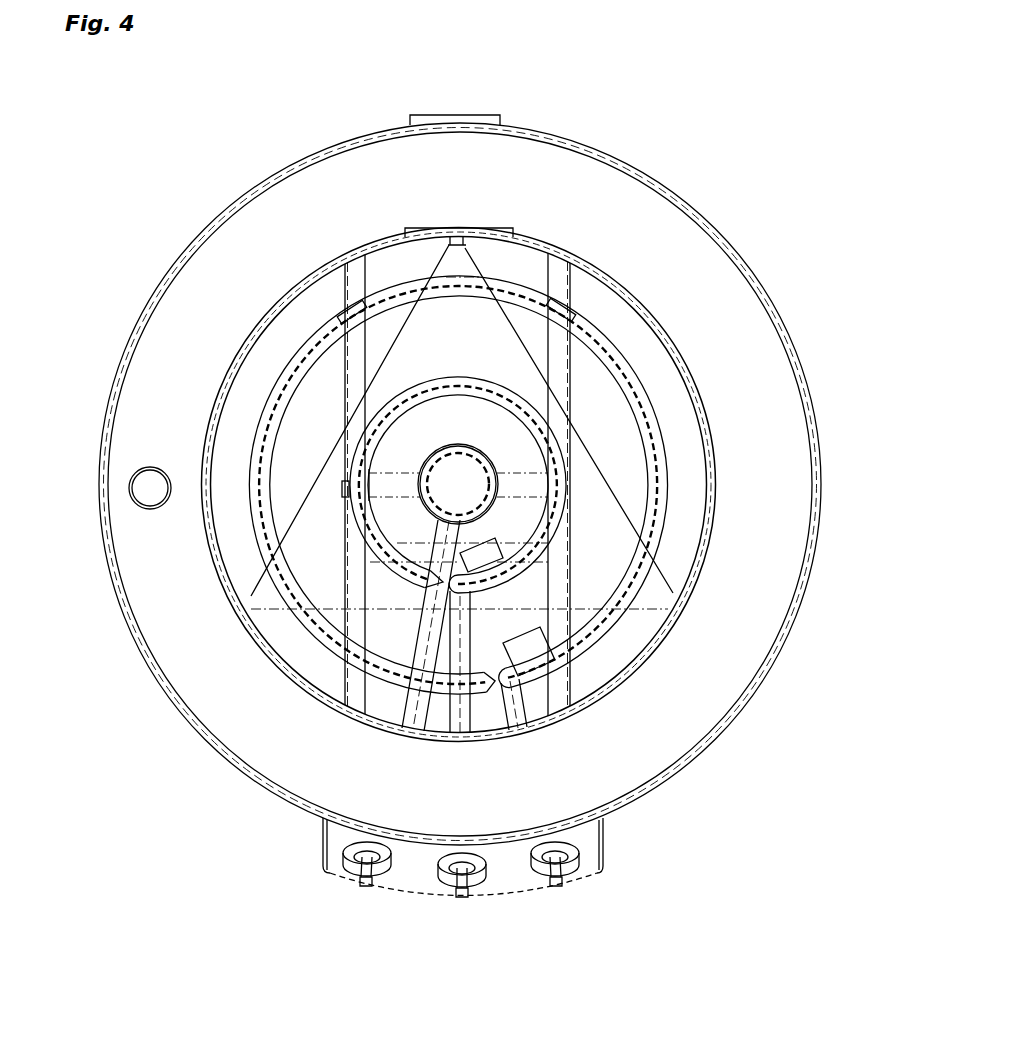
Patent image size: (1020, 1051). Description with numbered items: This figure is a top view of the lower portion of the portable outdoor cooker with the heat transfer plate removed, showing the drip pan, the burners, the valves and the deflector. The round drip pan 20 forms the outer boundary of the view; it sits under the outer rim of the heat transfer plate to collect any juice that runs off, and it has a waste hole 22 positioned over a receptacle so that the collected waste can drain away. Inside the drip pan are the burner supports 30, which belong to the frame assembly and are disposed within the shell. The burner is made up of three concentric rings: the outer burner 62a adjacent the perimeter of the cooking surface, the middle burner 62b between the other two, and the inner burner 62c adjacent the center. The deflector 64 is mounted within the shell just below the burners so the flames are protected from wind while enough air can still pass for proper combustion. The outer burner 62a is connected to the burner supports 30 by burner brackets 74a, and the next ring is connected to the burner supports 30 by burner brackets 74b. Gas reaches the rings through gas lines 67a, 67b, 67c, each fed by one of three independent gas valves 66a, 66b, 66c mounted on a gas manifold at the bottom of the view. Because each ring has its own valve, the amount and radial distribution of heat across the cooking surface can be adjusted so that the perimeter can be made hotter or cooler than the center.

The drip pan 20 is at (257, 222).
The waste hole 22 is at (130, 472).
The burner supports 30 is at (560, 373).
The outer burner 62a is at (610, 340).
The middle burner 62b is at (547, 423).
The inner burner 62c is at (482, 478).
The deflector 64 is at (470, 342).
The gas valve 66a is at (568, 882).
The second gas valve 66b is at (462, 898).
The gas valve 66c is at (360, 882).
The gas line 67a is at (513, 703).
The gas line 67b is at (463, 720).
The gas line 67c is at (395, 702).
The burner brackets 74a is at (350, 302).
The burner brackets 74b is at (347, 490).